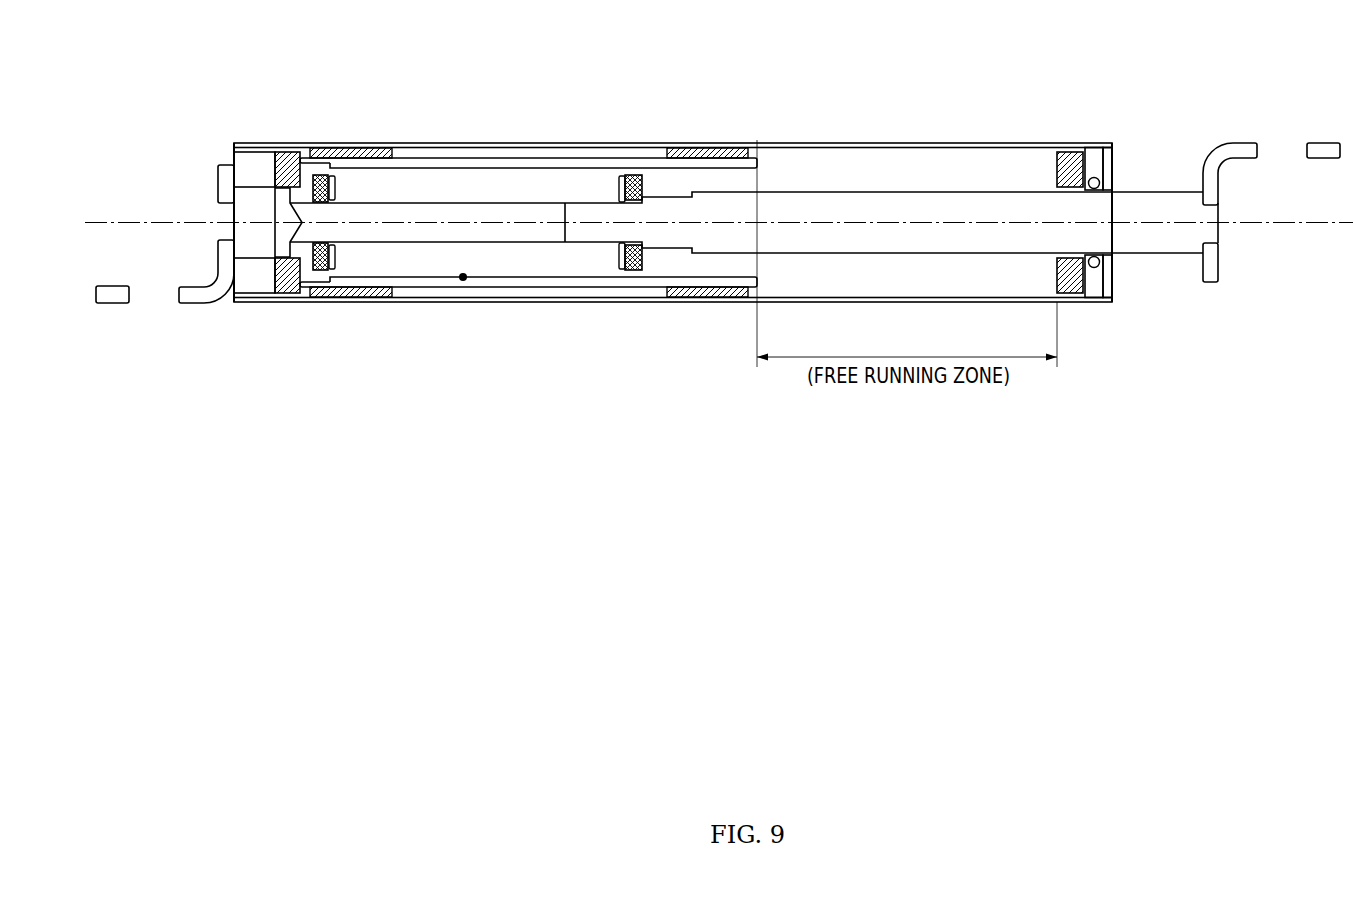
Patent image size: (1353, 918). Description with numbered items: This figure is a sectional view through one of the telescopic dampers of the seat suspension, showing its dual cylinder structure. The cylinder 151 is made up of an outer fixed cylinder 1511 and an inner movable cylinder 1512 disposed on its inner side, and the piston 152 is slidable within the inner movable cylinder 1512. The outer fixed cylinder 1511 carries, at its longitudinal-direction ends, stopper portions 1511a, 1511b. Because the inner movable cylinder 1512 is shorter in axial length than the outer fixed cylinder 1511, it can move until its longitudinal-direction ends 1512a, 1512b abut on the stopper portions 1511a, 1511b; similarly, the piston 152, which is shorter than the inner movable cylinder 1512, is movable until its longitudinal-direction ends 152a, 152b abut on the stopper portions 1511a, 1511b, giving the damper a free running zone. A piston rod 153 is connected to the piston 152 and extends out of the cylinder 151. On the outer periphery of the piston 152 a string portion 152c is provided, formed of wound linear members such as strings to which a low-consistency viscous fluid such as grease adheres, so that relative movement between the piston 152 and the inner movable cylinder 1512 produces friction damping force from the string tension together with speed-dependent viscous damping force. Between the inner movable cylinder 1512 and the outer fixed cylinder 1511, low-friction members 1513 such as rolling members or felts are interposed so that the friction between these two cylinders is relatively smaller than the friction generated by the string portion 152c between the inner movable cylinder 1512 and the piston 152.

The cylinder 151 is at (953, 143).
The outer fixed cylinder 1511 is at (629, 142).
The stopper portion 1511a is at (274, 151).
The stopper portion 1511b is at (1072, 287).
The inner movable cylinder 1512 is at (540, 157).
The longitudinal-direction end 1512a is at (304, 158).
The longitudinal-direction end 1512b is at (763, 163).
The low-friction member 1513 is at (692, 288).
The piston 152 is at (431, 274).
The longitudinal-direction end 152a is at (322, 271).
The longitudinal-direction end 152b is at (642, 271).
The string portion 152c is at (465, 282).
The piston rod 153 is at (1155, 190).